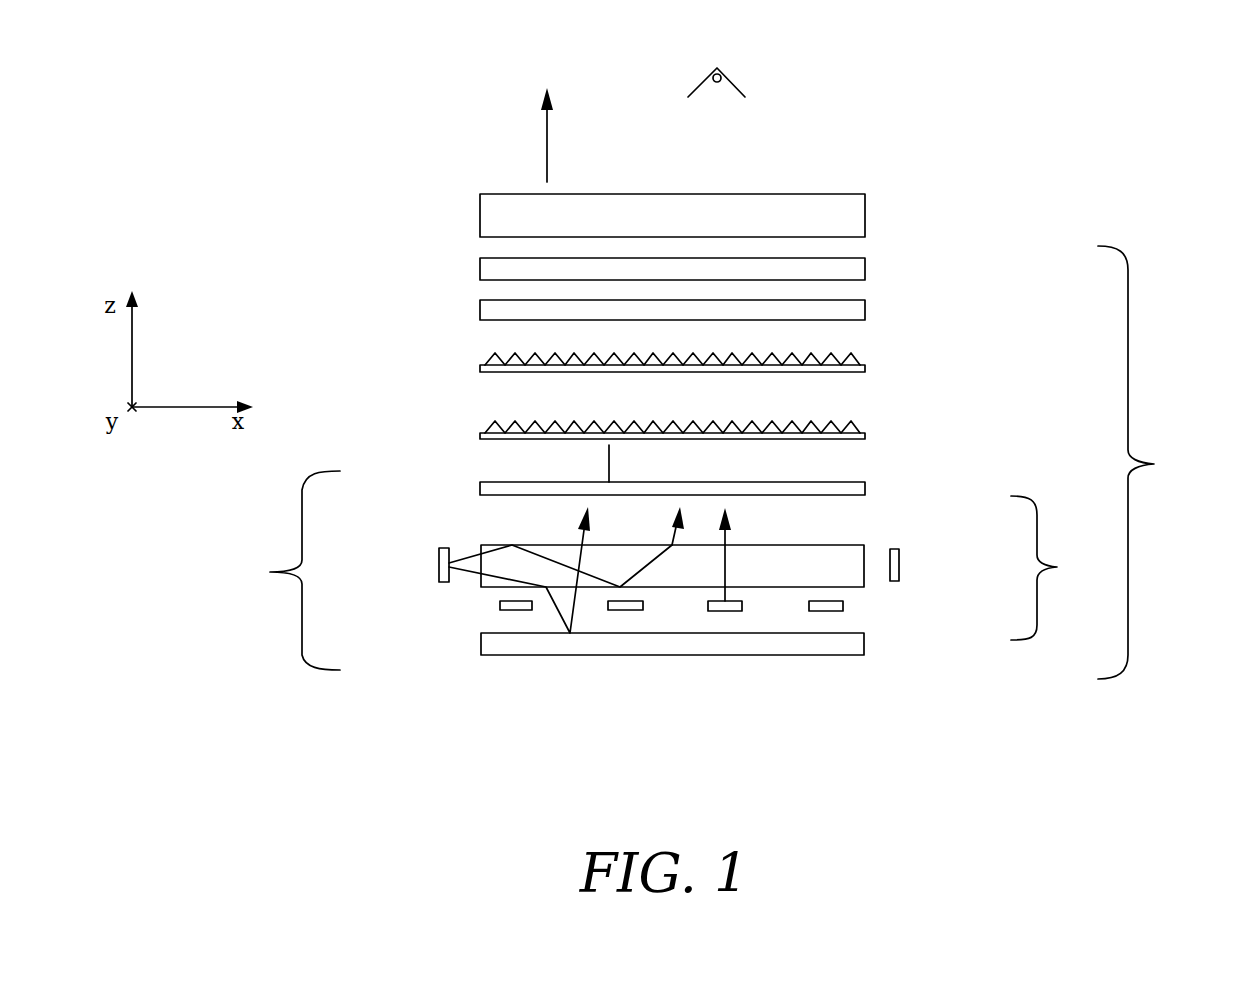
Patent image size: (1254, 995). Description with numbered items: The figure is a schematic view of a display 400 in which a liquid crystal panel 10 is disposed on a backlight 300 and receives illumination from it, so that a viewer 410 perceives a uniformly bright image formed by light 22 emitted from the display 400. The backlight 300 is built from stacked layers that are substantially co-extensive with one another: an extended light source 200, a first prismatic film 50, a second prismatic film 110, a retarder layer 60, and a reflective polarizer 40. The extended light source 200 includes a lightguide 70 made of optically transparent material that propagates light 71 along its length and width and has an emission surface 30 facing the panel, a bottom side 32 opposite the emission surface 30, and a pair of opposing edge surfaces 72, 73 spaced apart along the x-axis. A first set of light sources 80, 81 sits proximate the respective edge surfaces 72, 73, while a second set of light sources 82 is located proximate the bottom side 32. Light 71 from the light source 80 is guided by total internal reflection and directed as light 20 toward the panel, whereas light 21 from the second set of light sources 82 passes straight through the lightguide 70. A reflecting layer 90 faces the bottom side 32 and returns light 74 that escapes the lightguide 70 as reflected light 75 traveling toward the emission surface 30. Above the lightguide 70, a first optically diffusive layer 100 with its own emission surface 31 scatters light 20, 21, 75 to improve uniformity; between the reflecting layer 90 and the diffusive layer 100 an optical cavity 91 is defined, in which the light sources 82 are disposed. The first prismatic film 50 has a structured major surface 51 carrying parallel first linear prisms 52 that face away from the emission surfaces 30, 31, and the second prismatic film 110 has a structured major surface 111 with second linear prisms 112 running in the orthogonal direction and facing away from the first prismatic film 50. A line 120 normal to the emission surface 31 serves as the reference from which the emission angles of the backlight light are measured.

The display 400 is at (312, 149).
The viewer 410 is at (730, 80).
The light 22 is at (547, 148).
The liquid crystal panel 10 is at (865, 215).
The reflective polarizer 40 is at (480, 268).
The retarder layer 60 is at (865, 305).
The second prismatic film 110 is at (865, 368).
The structured major surface 111 is at (721, 340).
The second linear prisms 112 is at (806, 358).
The first prismatic film 50 is at (620, 423).
The structured major surface 51 is at (482, 430).
The first linear prisms 52 is at (538, 431).
The first optically diffusive layer 100 is at (650, 470).
The line normal to the emission surface 120 is at (609, 463).
The emission surface 31 is at (823, 481).
The lightguide 70 is at (677, 582).
The emission surface 30 is at (812, 543).
The bottom side 32 is at (843, 587).
The light 71 is at (489, 549).
The edge surface 72 is at (481, 550).
The edge surface 73 is at (864, 550).
The light 20 is at (672, 549).
The light 21 is at (726, 565).
The light 74 is at (560, 613).
The reflected light 75 is at (582, 613).
The light source 80 is at (439, 565).
The light source 81 is at (899, 565).
The second set of light sources 82 is at (500, 606).
The reflecting layer 90 is at (803, 642).
The extended light source 200 is at (279, 570).
The optical cavity 91 is at (1051, 568).
The backlight 300 is at (1152, 462).